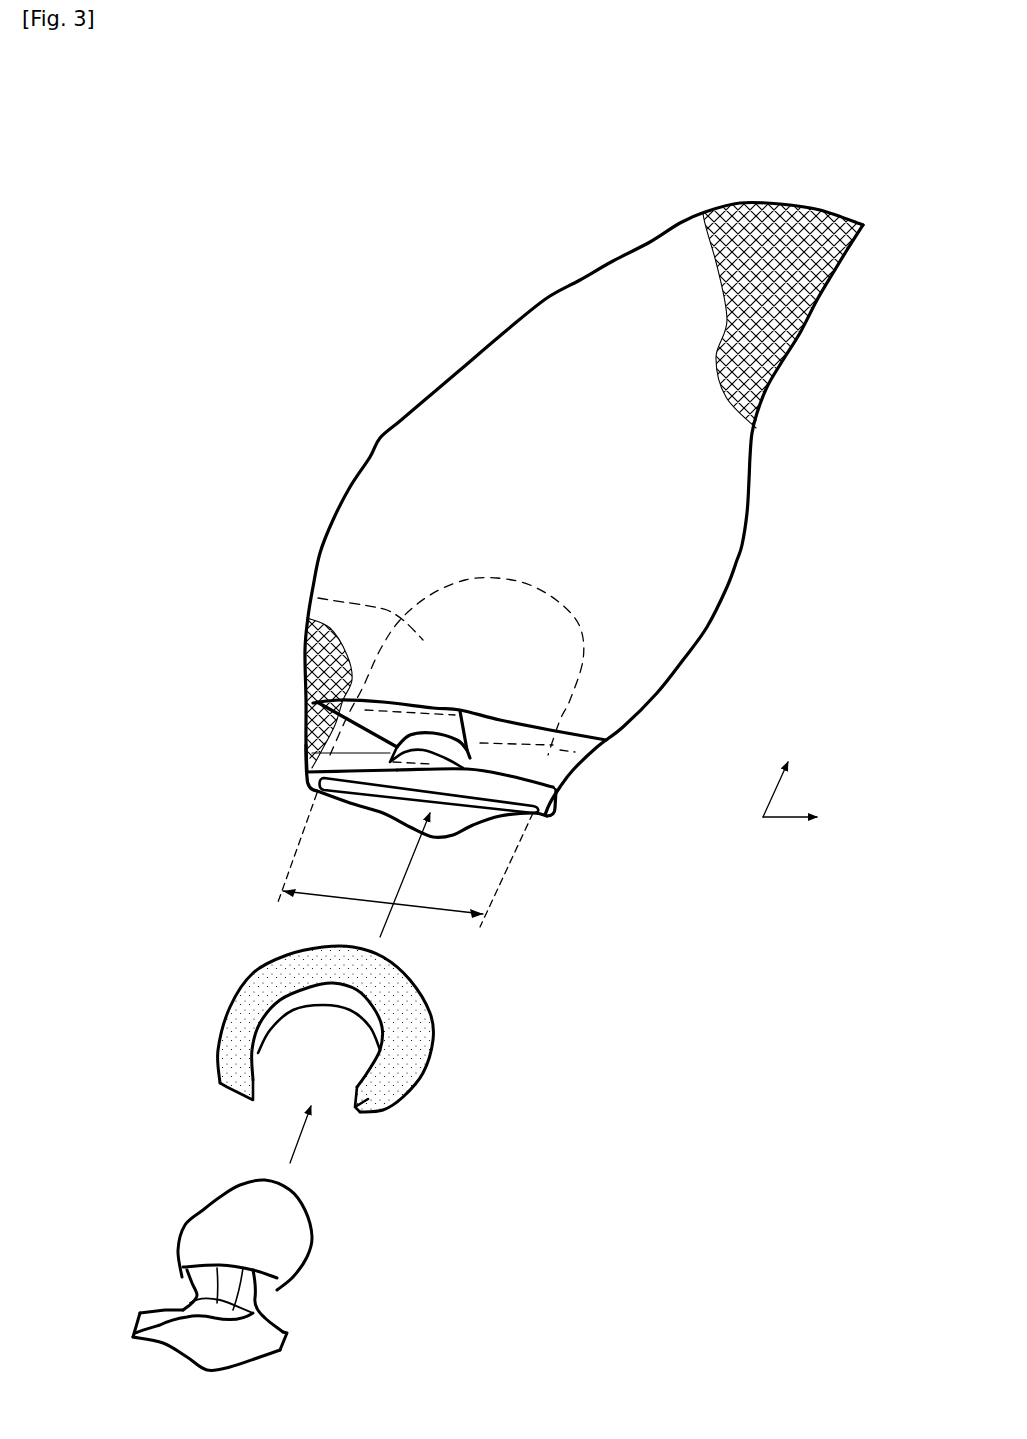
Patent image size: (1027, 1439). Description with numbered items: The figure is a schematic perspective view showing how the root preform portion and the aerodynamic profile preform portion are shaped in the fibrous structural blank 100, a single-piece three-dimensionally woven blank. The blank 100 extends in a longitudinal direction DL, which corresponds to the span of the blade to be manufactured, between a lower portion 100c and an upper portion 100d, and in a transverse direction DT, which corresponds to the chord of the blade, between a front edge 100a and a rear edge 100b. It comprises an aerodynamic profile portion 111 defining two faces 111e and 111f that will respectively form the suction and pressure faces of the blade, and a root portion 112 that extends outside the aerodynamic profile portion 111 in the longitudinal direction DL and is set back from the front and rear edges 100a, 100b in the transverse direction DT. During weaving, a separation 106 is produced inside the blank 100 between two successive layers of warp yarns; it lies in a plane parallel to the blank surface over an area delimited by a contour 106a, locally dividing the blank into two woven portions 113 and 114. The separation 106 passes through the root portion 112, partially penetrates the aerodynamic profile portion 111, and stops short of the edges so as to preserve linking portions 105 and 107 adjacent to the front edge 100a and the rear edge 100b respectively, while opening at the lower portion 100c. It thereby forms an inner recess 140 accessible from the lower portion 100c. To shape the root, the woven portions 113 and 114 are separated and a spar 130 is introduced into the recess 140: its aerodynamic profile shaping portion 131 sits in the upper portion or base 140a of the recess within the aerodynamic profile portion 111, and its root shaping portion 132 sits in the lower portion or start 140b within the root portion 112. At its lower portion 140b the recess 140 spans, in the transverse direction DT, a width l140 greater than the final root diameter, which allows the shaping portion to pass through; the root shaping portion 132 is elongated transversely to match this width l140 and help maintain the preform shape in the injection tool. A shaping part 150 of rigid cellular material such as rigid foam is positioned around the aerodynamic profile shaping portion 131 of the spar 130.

The fibrous structural blank 100 is at (467, 250).
The front edge 100a is at (428, 390).
The rear edge 100b is at (730, 587).
The lower portion 100c is at (320, 793).
The upper portion 100d is at (793, 204).
The aerodynamic profile portion 111 is at (704, 520).
The face of aerodynamic profile portion 111e is at (400, 483).
The face of aerodynamic profile portion 111f is at (651, 697).
The root portion 112 is at (560, 777).
The woven portion 113 is at (322, 741).
The woven portion 114 is at (403, 806).
The linking portion 105 is at (310, 780).
The separation 106 is at (450, 793).
The inner recess 140 is at (450, 793).
The contour 106a is at (575, 630).
The linking portion 107 is at (533, 816).
The upper portion or base of recess 140a is at (312, 597).
The lower portion or start of recess 140b is at (590, 760).
The width of recess l140 is at (358, 910).
The shaping part 150 is at (433, 1022).
The spar 130 is at (278, 1275).
The aerodynamic profile shaping portion 131 is at (207, 1237).
The root shaping portion 132 is at (283, 1320).
The longitudinal direction DL is at (777, 783).
The transverse direction DT is at (793, 820).